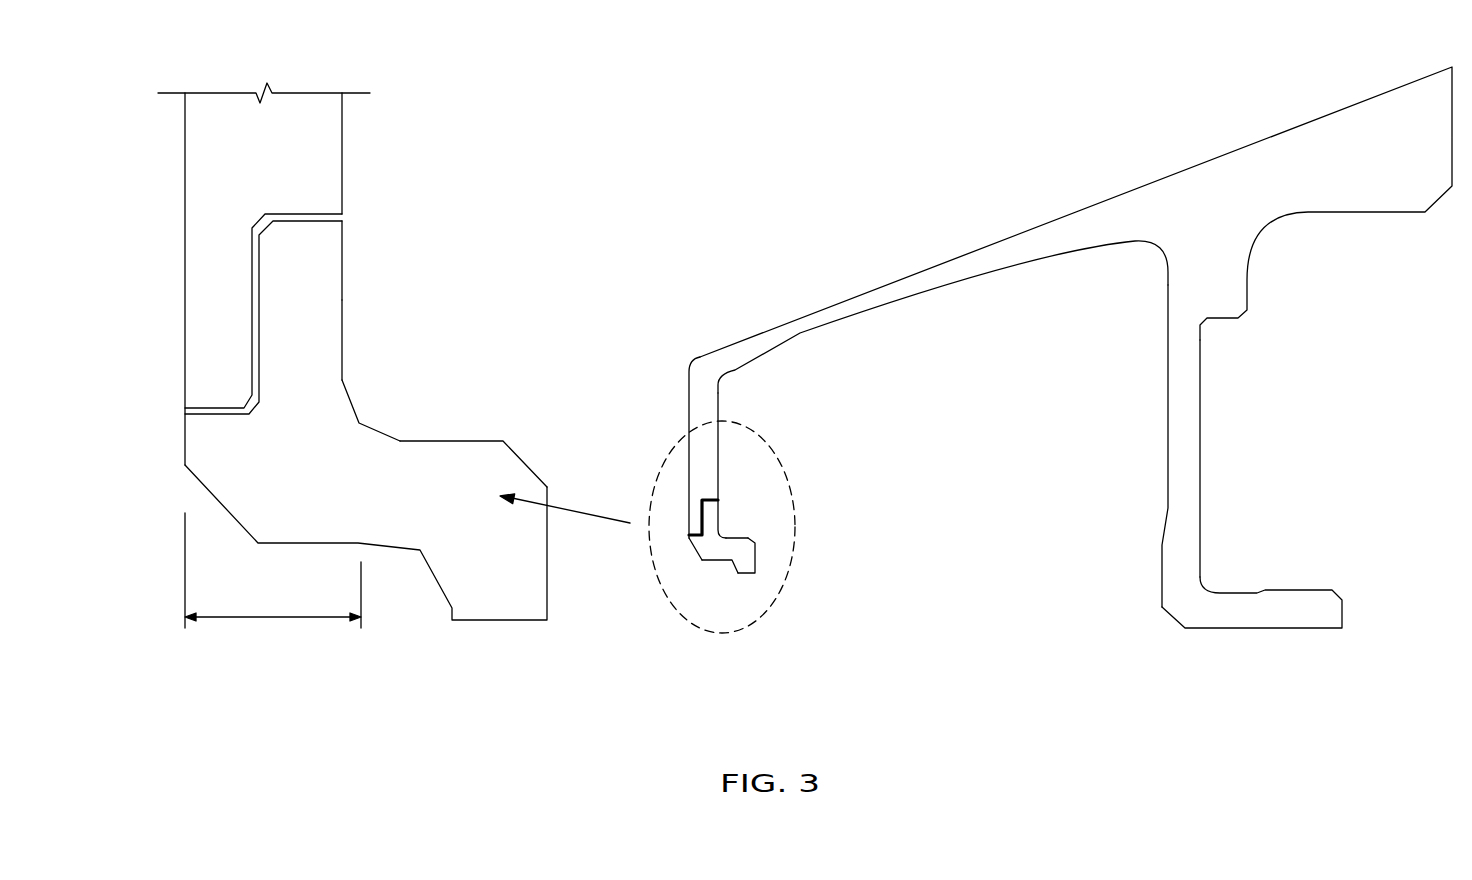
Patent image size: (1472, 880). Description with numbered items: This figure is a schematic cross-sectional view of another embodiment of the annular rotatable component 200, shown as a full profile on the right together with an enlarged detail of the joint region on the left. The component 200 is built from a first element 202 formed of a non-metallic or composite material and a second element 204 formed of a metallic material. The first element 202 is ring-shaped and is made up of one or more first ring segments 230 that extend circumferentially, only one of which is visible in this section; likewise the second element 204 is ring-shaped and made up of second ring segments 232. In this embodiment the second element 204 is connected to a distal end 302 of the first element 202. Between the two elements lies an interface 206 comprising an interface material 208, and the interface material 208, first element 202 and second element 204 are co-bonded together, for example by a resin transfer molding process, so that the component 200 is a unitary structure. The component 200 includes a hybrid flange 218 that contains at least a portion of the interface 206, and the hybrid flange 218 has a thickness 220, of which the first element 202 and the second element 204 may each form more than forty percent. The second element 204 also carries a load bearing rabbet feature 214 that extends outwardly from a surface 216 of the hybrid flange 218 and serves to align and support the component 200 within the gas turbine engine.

The annular rotatable component 200 is at (407, 80).
The first element 202 is at (322, 145).
The second element 204 is at (338, 405).
The interface 206 is at (364, 249).
The interface material 208 is at (333, 217).
The load bearing rabbet feature 214 is at (450, 462).
The surface 216 is at (342, 318).
The hybrid flange 218 is at (163, 332).
The thickness 220 is at (268, 617).
The first ring segment 230 is at (212, 156).
The second ring segment 232 is at (384, 450).
The distal end 302 is at (278, 193).